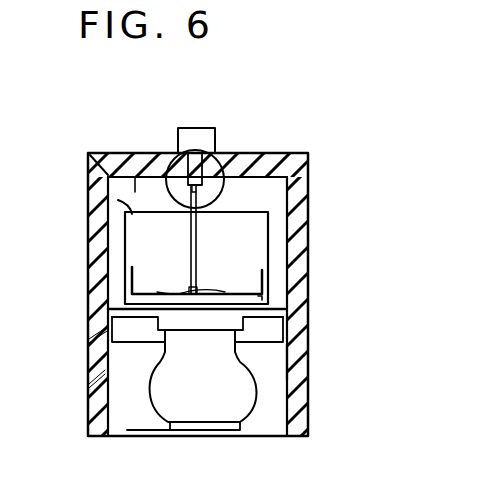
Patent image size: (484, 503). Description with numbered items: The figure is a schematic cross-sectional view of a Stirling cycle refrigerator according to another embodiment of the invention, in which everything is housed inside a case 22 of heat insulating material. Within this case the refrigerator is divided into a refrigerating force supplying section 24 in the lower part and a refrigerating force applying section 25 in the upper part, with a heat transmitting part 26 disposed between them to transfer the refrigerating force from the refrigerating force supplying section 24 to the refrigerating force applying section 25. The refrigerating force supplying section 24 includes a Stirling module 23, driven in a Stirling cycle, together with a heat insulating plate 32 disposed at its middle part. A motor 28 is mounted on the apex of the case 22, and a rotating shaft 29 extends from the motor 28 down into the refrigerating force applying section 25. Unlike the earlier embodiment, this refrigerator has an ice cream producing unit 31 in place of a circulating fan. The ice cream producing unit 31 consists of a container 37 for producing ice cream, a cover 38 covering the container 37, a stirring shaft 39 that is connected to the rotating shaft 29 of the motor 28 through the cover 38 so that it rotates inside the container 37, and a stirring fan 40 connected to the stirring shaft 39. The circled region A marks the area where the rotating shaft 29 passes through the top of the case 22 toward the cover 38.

The case of heat insulating material 22 is at (90, 156).
The Stirling module 23 is at (243, 390).
The refrigerating force supplying section 24 is at (273, 363).
The refrigerating force applying section 25 is at (137, 192).
The heat transmitting part 26 is at (110, 330).
The motor 28 is at (197, 143).
The rotating shaft 29 is at (185, 163).
The ice cream producing unit 31 is at (268, 252).
The heat insulating plate 32 is at (100, 372).
The container 37 is at (122, 272).
The cover 38 is at (130, 212).
The stirring shaft 39 is at (200, 248).
The stirring fan 40 is at (262, 297).
The detail circle A is at (203, 168).